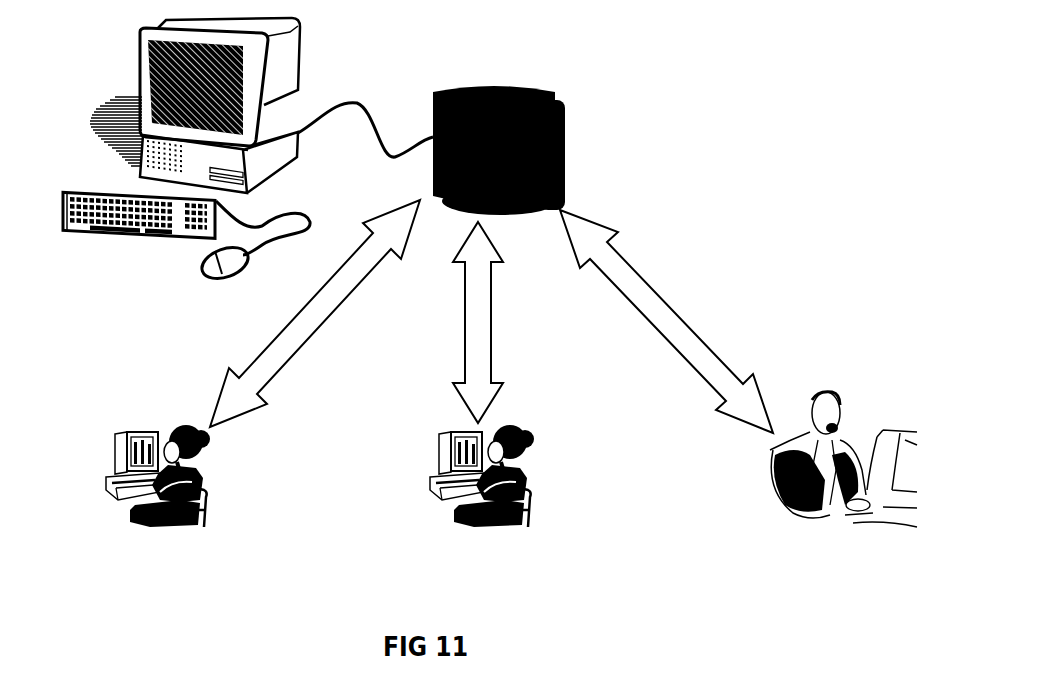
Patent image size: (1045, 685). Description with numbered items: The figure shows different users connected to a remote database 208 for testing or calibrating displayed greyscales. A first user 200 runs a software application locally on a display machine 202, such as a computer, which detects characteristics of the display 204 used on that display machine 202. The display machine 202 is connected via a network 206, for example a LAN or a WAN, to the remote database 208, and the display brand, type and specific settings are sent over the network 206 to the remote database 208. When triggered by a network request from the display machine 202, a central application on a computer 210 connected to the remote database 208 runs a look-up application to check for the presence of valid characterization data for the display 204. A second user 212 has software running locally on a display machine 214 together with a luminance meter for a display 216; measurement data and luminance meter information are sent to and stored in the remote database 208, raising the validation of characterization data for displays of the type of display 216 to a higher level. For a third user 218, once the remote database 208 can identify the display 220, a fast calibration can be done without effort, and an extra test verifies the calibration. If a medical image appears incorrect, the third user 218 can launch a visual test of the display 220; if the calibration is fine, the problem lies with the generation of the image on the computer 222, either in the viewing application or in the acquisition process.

The first user 200 is at (194, 476).
The display machine 202 is at (100, 430).
The display 204 is at (140, 443).
The network 206 is at (343, 327).
The remote database 208 is at (518, 172).
The computer 210 is at (120, 118).
The second user 212 is at (518, 476).
The display machine 214 is at (422, 430).
The display 216 is at (457, 438).
The third user 218 is at (790, 455).
The display 220 is at (885, 440).
The computer 222 is at (947, 527).